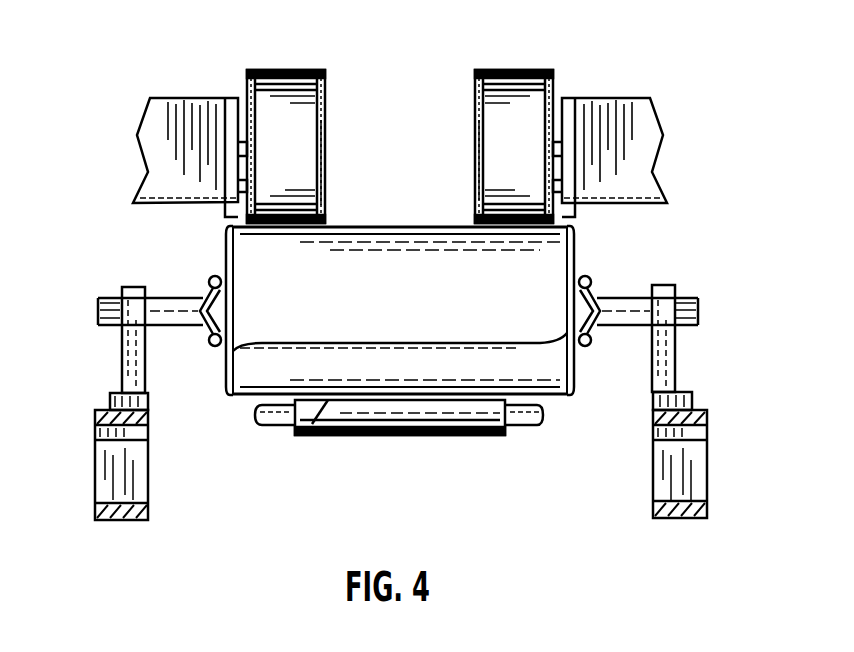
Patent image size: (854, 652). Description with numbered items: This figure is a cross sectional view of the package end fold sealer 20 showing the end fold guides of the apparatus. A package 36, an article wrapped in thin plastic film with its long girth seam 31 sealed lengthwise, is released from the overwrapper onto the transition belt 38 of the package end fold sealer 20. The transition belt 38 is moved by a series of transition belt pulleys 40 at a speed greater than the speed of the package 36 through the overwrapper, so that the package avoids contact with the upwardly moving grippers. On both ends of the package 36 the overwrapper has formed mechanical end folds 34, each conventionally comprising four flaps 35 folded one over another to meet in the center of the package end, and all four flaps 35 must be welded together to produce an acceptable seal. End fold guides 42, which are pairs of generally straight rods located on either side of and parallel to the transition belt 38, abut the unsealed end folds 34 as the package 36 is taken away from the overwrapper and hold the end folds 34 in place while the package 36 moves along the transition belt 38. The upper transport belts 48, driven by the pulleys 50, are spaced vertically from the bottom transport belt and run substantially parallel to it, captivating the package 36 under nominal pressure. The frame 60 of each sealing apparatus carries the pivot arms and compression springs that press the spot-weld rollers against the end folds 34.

The package end fold sealer 20 is at (188, 67).
The long girth seam 31 is at (380, 343).
The end folds 34 is at (225, 257).
The flaps 35 is at (226, 370).
The package 36 is at (418, 226).
The transition belt 38 is at (308, 435).
The transition belt pulleys 40 is at (507, 427).
The end fold guides 42 is at (208, 282).
The upper transport belts 48 is at (485, 69).
The pulleys 50 is at (475, 186).
The frame 60 is at (95, 467).